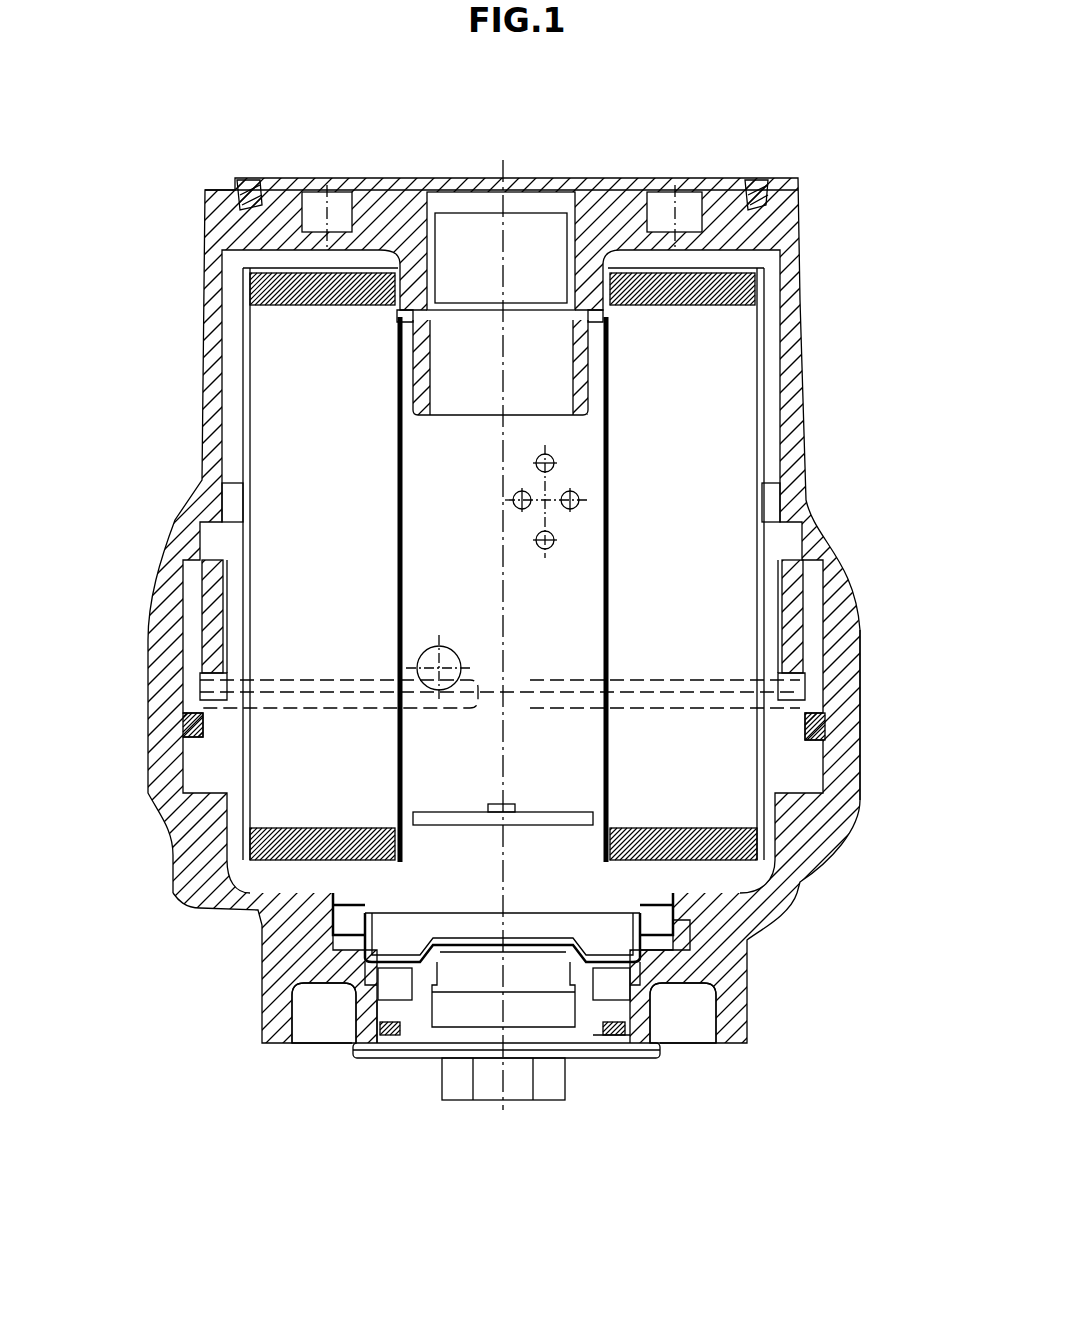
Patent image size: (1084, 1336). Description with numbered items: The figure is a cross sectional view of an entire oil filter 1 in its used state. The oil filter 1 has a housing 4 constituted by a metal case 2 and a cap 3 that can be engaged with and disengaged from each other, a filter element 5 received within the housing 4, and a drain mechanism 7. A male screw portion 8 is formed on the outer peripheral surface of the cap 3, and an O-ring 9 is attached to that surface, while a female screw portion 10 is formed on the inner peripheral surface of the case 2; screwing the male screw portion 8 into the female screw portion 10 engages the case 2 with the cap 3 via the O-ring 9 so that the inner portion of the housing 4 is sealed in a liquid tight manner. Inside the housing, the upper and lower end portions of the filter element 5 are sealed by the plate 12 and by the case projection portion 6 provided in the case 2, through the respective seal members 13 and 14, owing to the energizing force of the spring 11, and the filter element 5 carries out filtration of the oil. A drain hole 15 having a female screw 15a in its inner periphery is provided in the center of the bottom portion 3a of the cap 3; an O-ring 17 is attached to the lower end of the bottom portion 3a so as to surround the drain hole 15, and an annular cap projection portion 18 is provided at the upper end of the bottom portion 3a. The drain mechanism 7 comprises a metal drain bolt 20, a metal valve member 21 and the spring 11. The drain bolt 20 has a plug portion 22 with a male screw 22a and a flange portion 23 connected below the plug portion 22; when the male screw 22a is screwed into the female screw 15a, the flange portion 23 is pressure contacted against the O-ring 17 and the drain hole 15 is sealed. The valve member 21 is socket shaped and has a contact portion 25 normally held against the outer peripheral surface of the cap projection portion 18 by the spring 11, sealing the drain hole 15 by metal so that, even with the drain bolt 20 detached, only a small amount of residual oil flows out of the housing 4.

The oil filter 1 is at (830, 160).
The case 2 is at (800, 290).
The cap 3 is at (780, 895).
The bottom portion 3a is at (320, 1045).
The housing 4 is at (857, 612).
The filter element 5 is at (735, 380).
The case projection portion 6 is at (620, 265).
The drain mechanism 7 is at (690, 1070).
The male screw portion 8 is at (205, 625).
The O-ring 9 is at (190, 725).
The female screw portion 10 is at (200, 560).
The spring 11 is at (715, 950).
The plate 12 is at (700, 900).
The seal member 13 is at (390, 265).
The seal member 14 is at (645, 830).
The drain hole 15 is at (470, 1000).
The female screw 15a is at (445, 1000).
The O-ring 17 is at (680, 1052).
The cap projection portion 18 is at (503, 1010).
The drain bolt 20 is at (570, 1072).
The valve member 21 is at (330, 965).
The plug portion 22 is at (580, 1000).
The male screw 22a is at (655, 1068).
The flange portion 23 is at (380, 1052).
The contact portion 25 is at (330, 905).